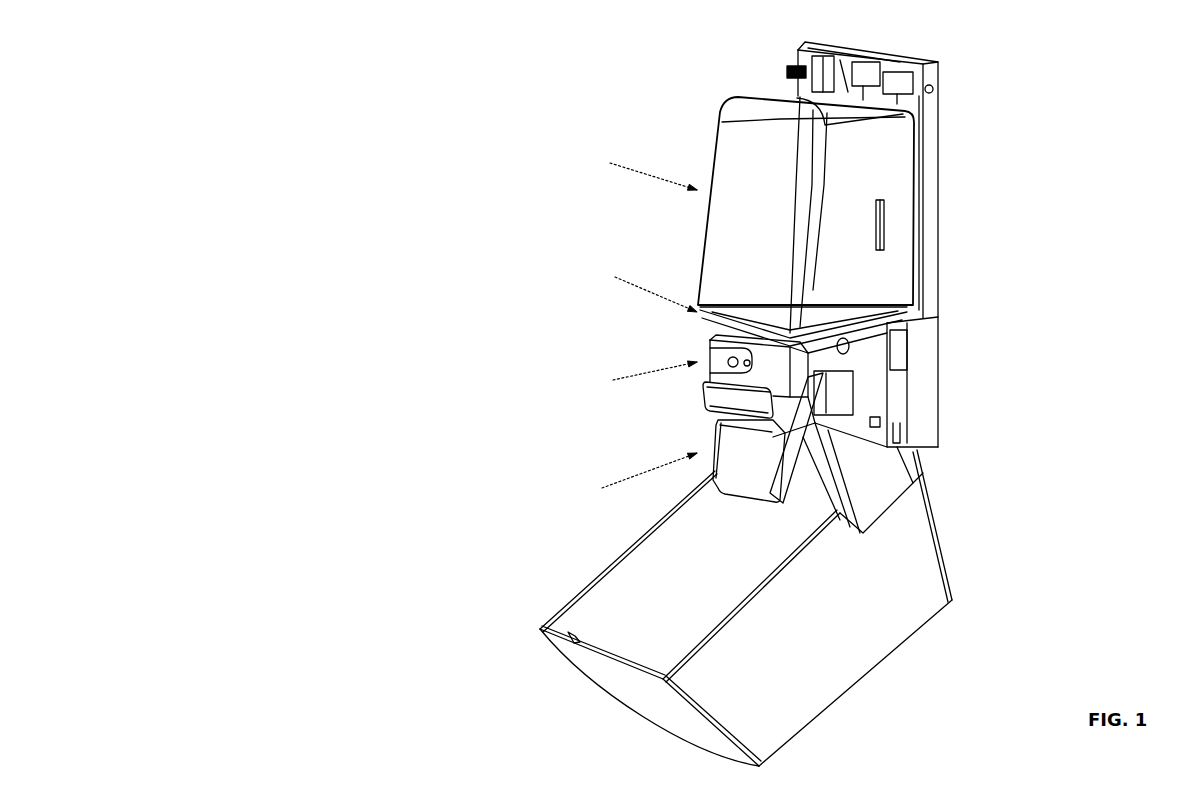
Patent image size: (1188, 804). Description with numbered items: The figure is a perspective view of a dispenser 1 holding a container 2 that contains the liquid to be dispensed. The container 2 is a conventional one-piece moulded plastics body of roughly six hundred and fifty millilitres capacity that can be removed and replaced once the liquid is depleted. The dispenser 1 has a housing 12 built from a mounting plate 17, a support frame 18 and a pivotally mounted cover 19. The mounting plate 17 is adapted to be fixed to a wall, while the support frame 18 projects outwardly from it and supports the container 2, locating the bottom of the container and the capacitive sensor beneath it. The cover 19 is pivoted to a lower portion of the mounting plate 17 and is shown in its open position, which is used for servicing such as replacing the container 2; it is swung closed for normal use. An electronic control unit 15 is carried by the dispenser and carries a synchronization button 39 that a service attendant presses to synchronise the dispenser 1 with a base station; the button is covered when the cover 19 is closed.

The dispenser 1 is at (1015, 102).
The container 2 is at (705, 128).
The housing 12 is at (963, 474).
The electronic control unit 15 is at (700, 345).
The mounting plate 17 is at (927, 187).
The support frame 18 is at (873, 370).
The cover 19 is at (875, 622).
The synchronization button 39 is at (730, 362).